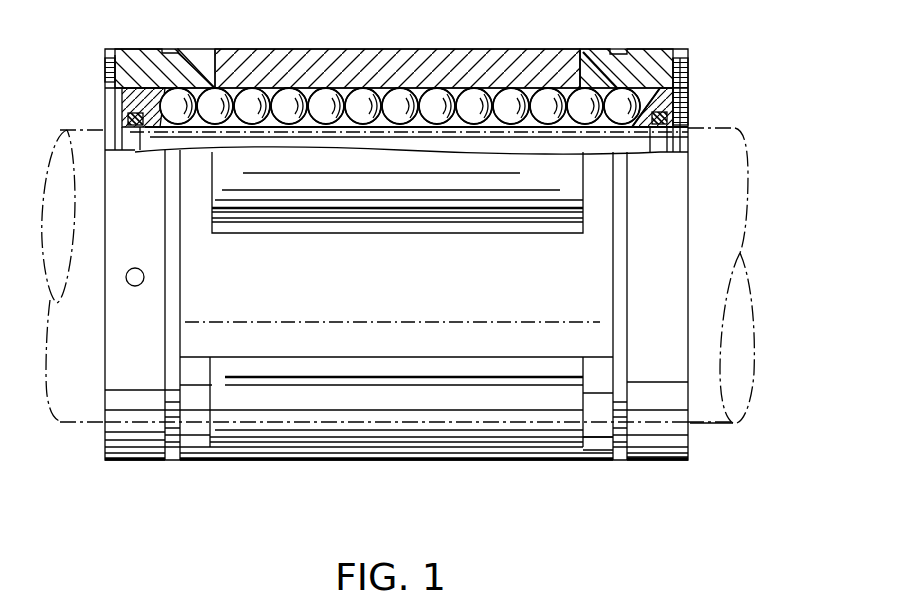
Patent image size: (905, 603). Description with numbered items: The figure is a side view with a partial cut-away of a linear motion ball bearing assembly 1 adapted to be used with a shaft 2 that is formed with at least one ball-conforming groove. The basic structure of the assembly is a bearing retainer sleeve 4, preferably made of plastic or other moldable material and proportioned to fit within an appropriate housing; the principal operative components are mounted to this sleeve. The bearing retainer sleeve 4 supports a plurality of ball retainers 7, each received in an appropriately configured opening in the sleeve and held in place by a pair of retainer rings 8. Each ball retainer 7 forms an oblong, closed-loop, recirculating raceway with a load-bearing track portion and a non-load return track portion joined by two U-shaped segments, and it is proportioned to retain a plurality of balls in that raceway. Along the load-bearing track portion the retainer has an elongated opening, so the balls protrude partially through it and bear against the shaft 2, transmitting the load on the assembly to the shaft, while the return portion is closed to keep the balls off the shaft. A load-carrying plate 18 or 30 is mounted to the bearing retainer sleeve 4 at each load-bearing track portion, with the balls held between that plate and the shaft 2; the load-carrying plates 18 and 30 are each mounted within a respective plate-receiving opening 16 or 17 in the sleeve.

The linear motion ball bearing assembly 1 is at (703, 72).
The shaft 2 is at (748, 160).
The bearing retainer sleeve 4 is at (650, 62).
The ball retainer 7 is at (655, 101).
The retainer ring 8 is at (125, 122).
The plate-receiving opening 16 is at (583, 198).
The plate-receiving opening 17 is at (572, 63).
The load-carrying plate 18 is at (222, 180).
The load-carrying plate 30 is at (260, 57).